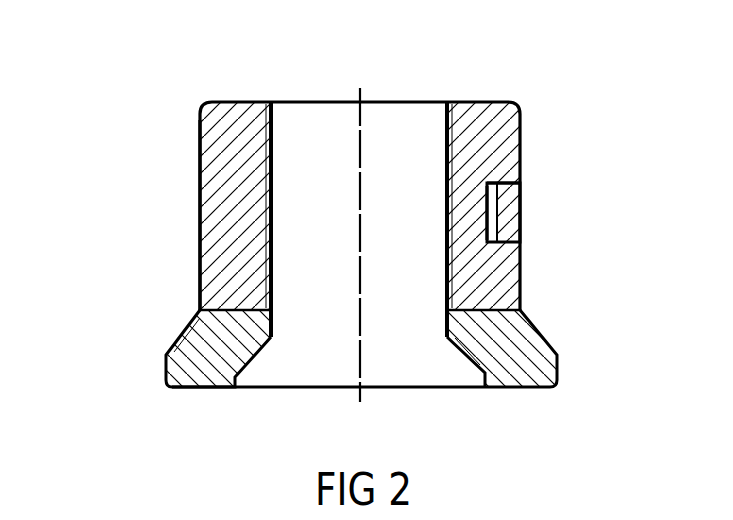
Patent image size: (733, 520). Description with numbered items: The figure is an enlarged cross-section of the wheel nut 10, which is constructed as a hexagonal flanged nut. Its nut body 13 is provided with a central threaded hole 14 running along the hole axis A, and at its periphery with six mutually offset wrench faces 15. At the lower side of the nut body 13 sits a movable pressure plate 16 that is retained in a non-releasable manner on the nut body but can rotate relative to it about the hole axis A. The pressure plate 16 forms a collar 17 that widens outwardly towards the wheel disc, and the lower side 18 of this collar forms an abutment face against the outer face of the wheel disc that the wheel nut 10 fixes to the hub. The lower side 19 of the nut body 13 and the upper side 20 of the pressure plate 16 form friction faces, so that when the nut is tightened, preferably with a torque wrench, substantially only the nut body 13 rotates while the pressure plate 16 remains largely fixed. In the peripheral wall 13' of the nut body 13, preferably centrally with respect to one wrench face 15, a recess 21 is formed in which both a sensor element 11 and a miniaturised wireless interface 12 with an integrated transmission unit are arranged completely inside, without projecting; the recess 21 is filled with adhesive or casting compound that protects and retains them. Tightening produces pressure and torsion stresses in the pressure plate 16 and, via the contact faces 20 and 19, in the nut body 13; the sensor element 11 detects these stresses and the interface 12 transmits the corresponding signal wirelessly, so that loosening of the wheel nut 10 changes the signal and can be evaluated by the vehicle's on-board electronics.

The wheel nut 10 is at (120, 118).
The sensor element 11 is at (515, 218).
The wireless interface 12 is at (517, 218).
The nut body 13 is at (207, 178).
The peripheral wall 13' is at (494, 197).
The central threaded hole 14 is at (267, 153).
The wrench faces 15 is at (198, 183).
The pressure plate 16 is at (533, 345).
The collar 17 is at (558, 358).
The lower side of the collar 18 is at (515, 388).
The lower side of the nut body 19 is at (198, 315).
The upper side of the pressure plate 20 is at (468, 306).
The recess 21 is at (515, 183).
The hole axis A is at (362, 170).